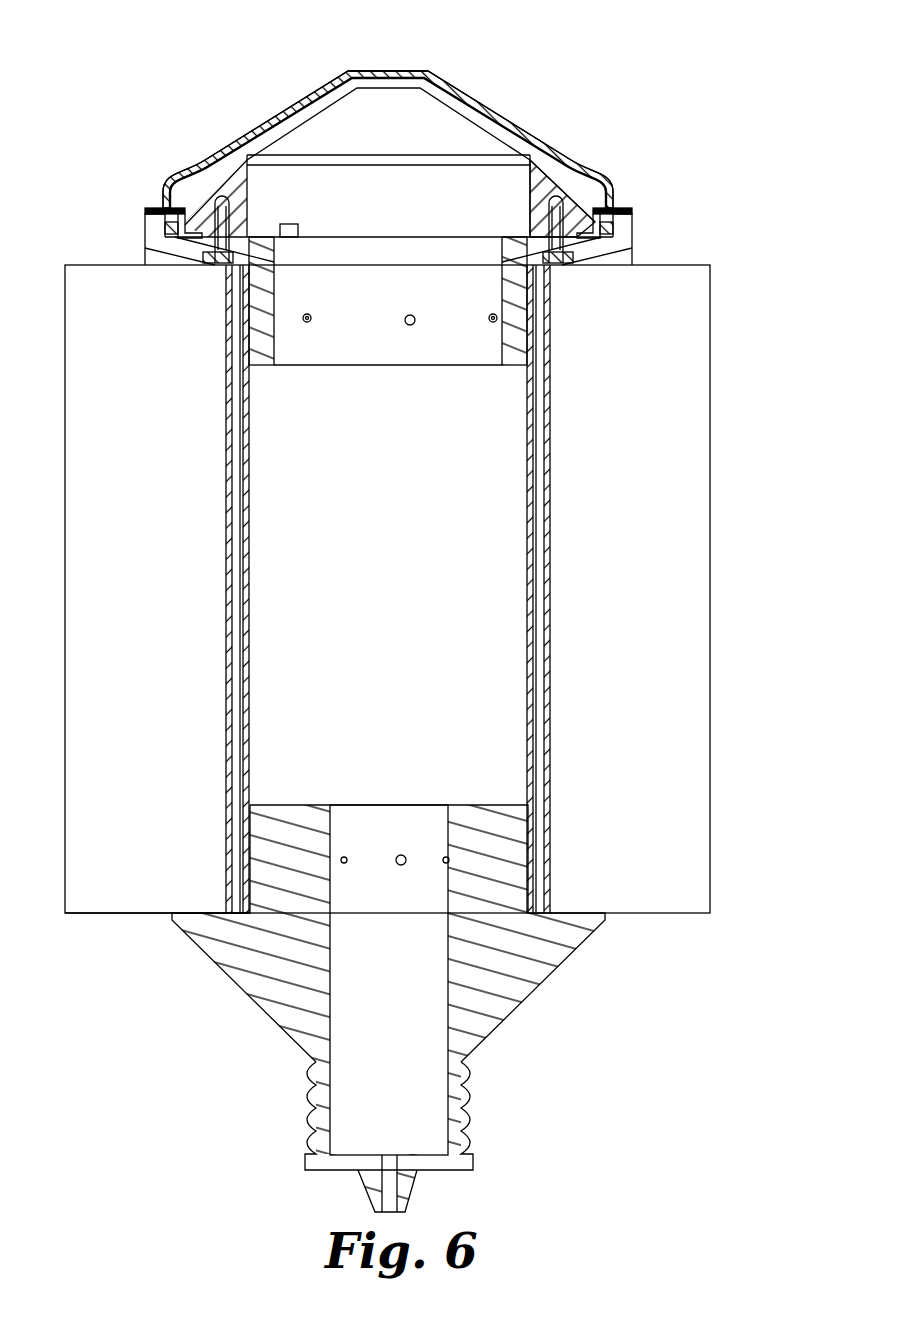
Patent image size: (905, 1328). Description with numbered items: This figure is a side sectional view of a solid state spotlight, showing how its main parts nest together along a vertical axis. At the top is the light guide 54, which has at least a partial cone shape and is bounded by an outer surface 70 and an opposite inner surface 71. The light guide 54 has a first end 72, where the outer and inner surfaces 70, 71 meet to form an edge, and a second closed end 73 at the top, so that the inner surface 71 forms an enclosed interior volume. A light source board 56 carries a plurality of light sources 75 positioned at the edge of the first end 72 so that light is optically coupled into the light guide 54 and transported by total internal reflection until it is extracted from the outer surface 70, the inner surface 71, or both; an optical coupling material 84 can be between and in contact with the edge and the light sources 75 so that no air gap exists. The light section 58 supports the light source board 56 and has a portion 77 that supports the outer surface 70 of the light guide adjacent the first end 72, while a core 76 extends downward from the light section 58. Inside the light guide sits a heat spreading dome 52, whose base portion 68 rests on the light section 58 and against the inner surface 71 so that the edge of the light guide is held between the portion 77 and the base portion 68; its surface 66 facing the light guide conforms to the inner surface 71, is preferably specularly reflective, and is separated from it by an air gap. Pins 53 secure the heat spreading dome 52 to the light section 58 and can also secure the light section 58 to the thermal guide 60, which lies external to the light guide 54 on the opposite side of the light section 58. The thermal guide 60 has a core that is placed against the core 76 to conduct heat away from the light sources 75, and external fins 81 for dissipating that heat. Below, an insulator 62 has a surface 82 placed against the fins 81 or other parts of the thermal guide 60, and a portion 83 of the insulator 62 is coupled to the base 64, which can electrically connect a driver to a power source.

The heat spreading dome 52 is at (242, 158).
The pins 53 is at (580, 222).
The light guide 54 is at (580, 150).
The light source board 56 is at (165, 238).
The light section 58 is at (633, 252).
The thermal guide 60 is at (712, 362).
The insulator 62 is at (392, 1000).
The base 64 is at (470, 1138).
The surface 66 is at (388, 136).
The base portion 68 is at (212, 242).
The outer surface 70 is at (505, 136).
The inner surface 71 is at (458, 103).
The first end 72 is at (608, 237).
The second closed end 73 is at (404, 70).
The light sources 75 is at (615, 230).
The core 76 is at (262, 357).
The portion 77 is at (145, 222).
The external fins 81 is at (700, 448).
The surface 82 is at (200, 912).
The portion 83 is at (432, 1098).
The optical coupling material 84 is at (143, 224).